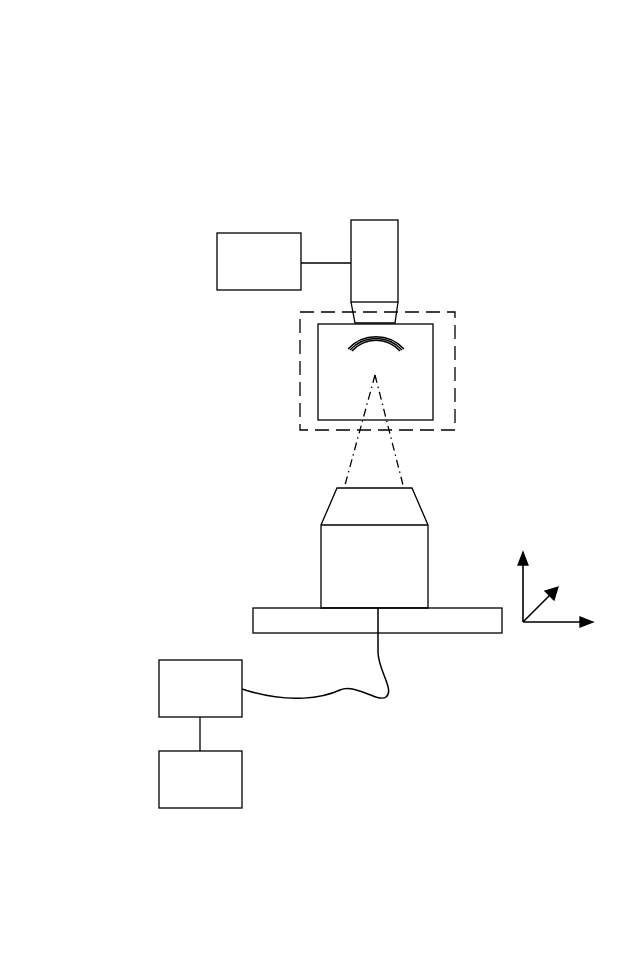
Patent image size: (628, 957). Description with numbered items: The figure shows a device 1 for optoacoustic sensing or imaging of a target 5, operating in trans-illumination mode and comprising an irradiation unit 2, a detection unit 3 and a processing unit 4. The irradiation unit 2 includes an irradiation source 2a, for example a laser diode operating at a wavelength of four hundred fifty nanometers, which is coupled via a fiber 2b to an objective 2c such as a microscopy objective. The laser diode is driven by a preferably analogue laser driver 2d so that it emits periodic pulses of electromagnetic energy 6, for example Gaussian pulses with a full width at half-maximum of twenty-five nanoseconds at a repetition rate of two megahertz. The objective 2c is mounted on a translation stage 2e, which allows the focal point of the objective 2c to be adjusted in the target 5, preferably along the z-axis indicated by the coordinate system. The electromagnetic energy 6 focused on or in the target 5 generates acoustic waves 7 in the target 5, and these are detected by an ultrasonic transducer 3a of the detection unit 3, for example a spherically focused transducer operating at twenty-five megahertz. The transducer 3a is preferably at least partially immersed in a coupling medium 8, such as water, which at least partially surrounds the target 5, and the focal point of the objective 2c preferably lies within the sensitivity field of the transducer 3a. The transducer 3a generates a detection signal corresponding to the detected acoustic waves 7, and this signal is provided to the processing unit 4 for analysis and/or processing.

The device 1 is at (80, 277).
The irradiation unit 2 is at (409, 722).
The irradiation source 2a is at (186, 704).
The fiber 2b is at (380, 652).
The objective 2c is at (368, 577).
The laser driver 2d is at (186, 794).
The translation stage 2e is at (273, 608).
The detection unit 3 is at (445, 192).
The ultrasonic transducer 3a is at (360, 277).
The processing unit 4 is at (268, 277).
The target 5 is at (433, 372).
The electromagnetic energy 6 is at (397, 460).
The acoustic waves 7 is at (398, 342).
The coupling medium 8 is at (455, 328).